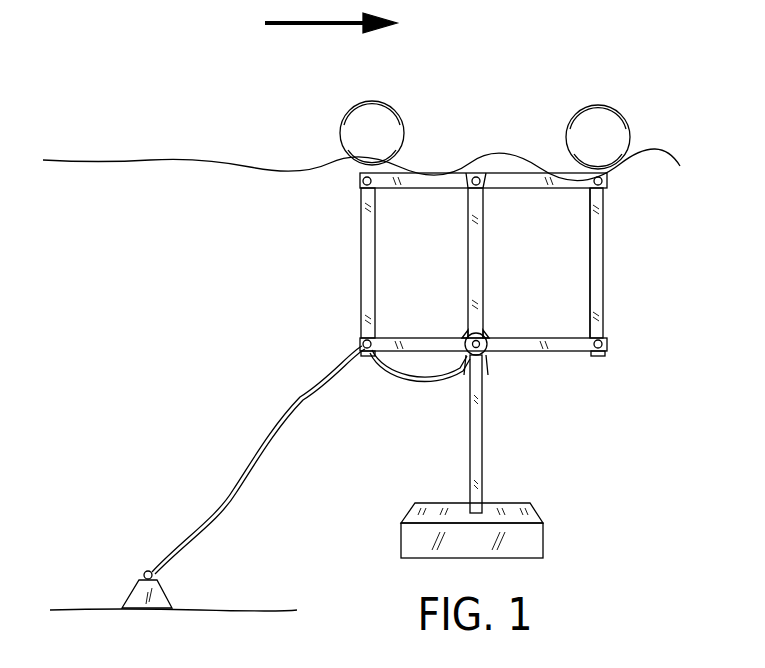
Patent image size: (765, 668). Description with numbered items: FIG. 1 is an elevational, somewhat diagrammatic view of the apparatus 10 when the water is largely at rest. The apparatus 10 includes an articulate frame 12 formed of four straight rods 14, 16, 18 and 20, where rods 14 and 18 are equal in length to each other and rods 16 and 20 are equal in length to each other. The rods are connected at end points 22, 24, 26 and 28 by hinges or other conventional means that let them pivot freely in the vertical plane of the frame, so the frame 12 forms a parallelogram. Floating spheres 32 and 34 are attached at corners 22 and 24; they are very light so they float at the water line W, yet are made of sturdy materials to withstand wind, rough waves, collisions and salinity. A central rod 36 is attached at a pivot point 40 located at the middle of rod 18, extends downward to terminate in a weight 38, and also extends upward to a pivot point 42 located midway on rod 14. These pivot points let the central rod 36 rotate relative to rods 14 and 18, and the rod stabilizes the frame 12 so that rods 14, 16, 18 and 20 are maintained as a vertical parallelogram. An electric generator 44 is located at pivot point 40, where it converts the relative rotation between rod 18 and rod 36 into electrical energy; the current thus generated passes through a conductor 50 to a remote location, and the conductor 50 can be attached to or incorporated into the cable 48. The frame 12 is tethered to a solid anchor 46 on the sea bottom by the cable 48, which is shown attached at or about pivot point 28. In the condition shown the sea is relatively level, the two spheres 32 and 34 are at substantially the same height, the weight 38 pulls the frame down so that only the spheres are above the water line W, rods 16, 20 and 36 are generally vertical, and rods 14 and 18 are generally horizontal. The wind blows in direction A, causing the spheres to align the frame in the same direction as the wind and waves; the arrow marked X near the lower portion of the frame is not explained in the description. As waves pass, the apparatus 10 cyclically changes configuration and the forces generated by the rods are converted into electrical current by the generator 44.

The apparatus 10 is at (300, 268).
The articulate frame 12 is at (594, 255).
The rod 14 is at (413, 186).
The rod 16 is at (604, 278).
The rod 18 is at (522, 339).
The rod 20 is at (375, 259).
The end point 22 is at (360, 180).
The end point 24 is at (604, 183).
The end point 26 is at (606, 347).
The end point 28 is at (358, 344).
The floating sphere 32 is at (372, 125).
The floating sphere 34 is at (598, 120).
The central rod 36 is at (475, 431).
The weight 38 is at (545, 516).
The pivot point 40 is at (481, 356).
The pivot point 42 is at (478, 172).
The electric generator 44 is at (465, 362).
The solid anchor 46 is at (140, 577).
The cable 48 is at (270, 435).
The conductor 50 is at (400, 363).
The wind direction A is at (331, 16).
The water line W is at (244, 153).
The direction of movement X is at (419, 381).